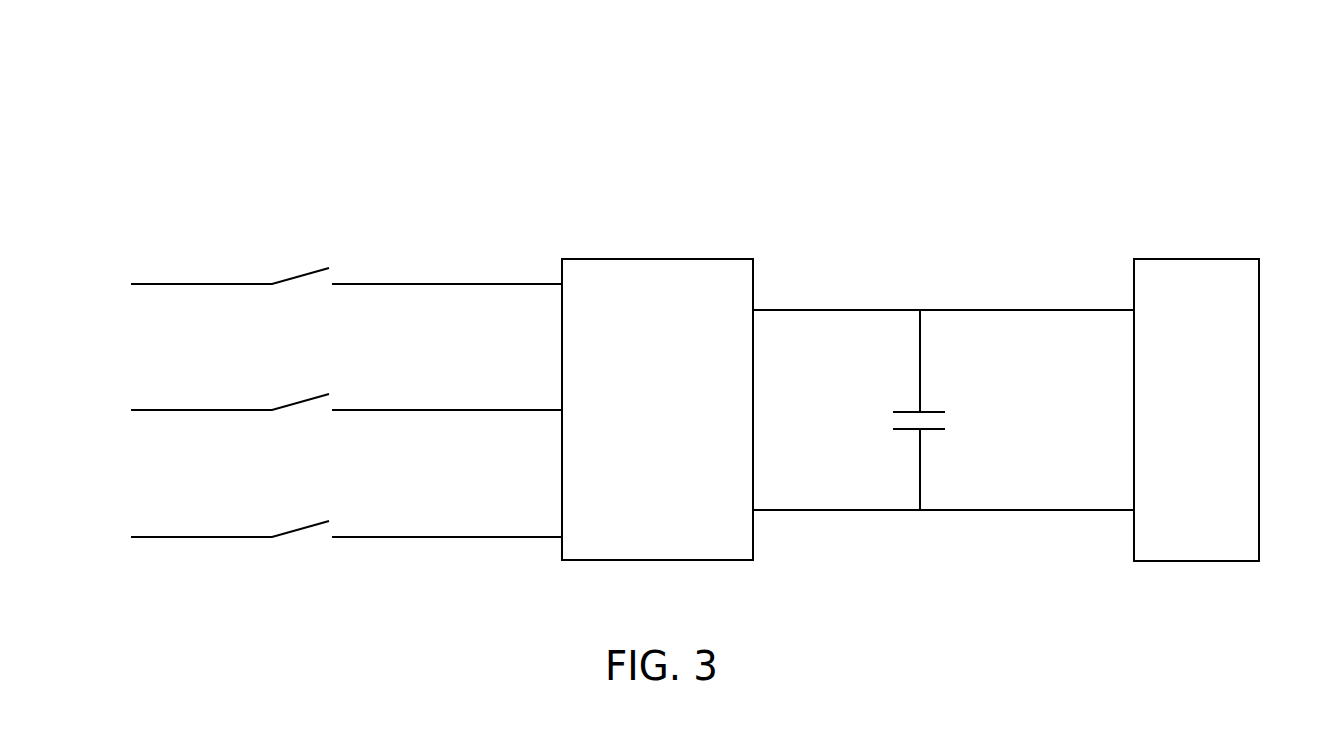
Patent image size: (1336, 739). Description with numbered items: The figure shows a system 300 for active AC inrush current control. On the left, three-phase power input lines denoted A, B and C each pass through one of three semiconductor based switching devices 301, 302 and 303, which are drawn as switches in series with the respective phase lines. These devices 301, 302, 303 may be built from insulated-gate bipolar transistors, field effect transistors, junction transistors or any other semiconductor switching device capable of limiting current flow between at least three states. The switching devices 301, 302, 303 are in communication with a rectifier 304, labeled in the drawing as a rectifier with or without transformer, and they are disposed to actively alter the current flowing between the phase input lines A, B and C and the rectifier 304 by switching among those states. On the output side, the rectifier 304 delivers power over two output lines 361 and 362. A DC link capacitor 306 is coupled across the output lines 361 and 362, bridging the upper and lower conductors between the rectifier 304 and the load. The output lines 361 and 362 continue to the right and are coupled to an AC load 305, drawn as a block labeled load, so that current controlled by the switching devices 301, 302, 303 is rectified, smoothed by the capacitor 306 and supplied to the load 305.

The system 300 is at (701, 309).
The semiconductor based switching device 301 is at (294, 525).
The semiconductor based switching device 302 is at (297, 398).
The semiconductor based switching device 303 is at (297, 272).
The rectifier 304 is at (620, 258).
The AC load 305 is at (1225, 258).
The DC link capacitor 306 is at (940, 411).
The output line 361 is at (1002, 310).
The output line 362 is at (1002, 510).